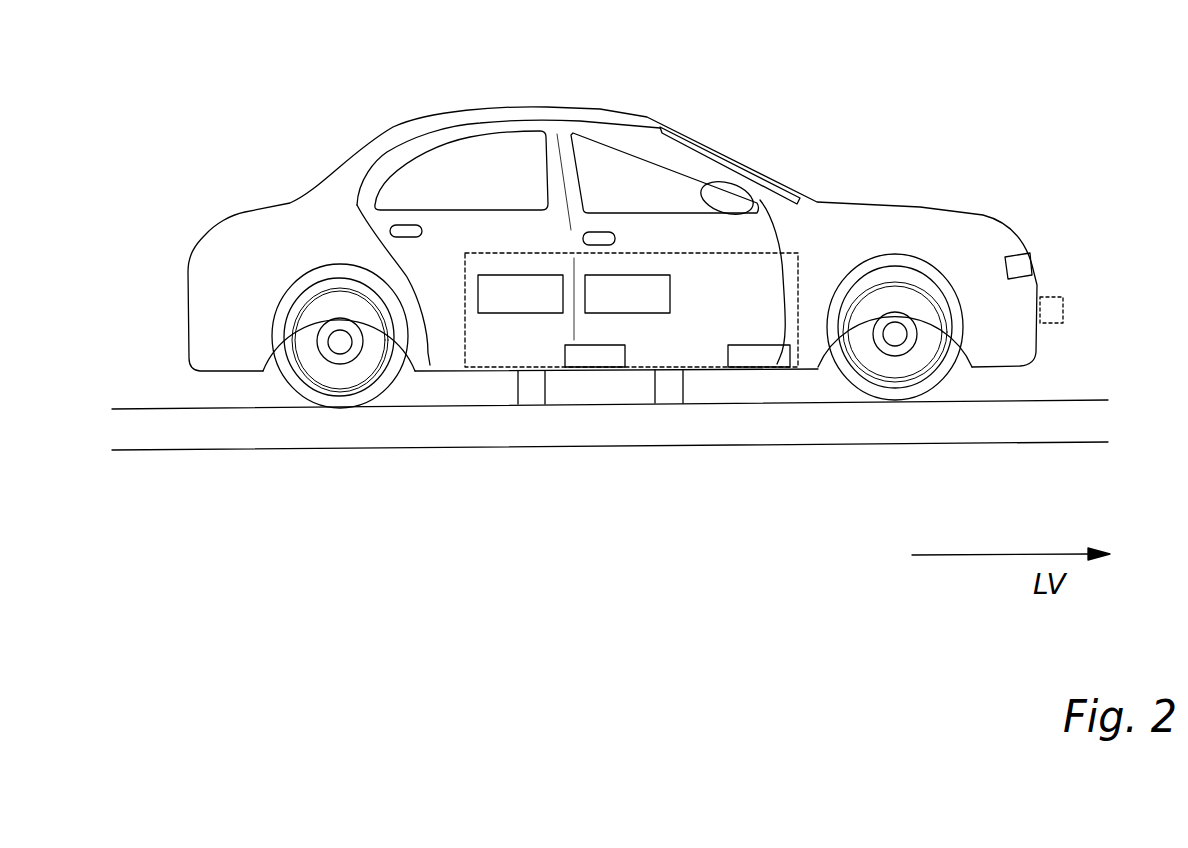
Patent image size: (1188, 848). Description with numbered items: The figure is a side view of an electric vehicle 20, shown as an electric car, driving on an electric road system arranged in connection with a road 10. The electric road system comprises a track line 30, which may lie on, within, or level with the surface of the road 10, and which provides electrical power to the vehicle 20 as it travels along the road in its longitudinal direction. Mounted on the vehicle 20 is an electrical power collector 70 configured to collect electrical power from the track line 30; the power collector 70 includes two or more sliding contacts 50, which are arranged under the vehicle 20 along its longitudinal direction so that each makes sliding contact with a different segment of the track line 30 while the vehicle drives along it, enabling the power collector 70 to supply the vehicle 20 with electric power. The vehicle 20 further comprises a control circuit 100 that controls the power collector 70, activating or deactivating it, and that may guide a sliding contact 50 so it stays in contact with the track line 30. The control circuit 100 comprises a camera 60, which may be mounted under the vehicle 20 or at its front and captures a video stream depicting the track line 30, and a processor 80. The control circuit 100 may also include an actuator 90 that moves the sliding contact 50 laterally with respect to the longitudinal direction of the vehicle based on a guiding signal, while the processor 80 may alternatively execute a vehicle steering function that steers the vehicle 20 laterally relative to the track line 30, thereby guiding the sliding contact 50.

The road 10 is at (138, 409).
The vehicle 20 is at (648, 117).
The track line 30 is at (188, 430).
The sliding contact 50 is at (518, 392).
The camera 60 is at (775, 370).
The electrical power collector 70 is at (617, 360).
The processor 80 is at (513, 315).
The actuator 90 is at (588, 362).
The control circuit 100 is at (798, 275).